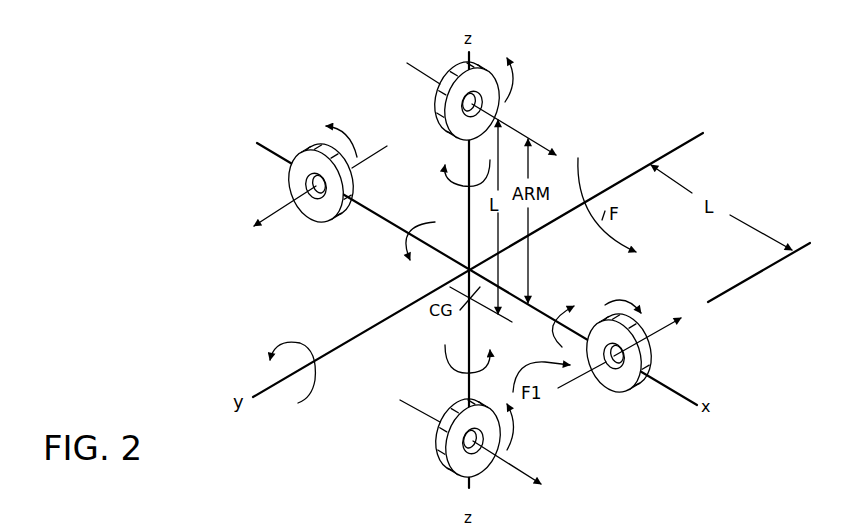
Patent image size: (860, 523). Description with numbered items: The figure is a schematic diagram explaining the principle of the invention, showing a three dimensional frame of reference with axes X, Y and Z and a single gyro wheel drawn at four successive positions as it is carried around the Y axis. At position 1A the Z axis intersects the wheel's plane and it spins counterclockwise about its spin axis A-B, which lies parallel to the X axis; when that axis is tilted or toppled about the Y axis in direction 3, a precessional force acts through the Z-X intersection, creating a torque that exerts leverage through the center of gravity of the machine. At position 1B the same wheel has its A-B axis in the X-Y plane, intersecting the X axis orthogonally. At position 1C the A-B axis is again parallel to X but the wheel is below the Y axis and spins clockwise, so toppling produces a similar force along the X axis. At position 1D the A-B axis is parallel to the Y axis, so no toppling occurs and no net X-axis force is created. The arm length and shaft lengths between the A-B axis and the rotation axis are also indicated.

The gyro wheel position 1A is at (438, 98).
The gyro wheel position 1B is at (288, 181).
The gyro wheel position 1C is at (435, 457).
The gyro wheel position 1D is at (623, 393).
The direction of rotation of axis A-B about the Y axis 3 is at (312, 344).